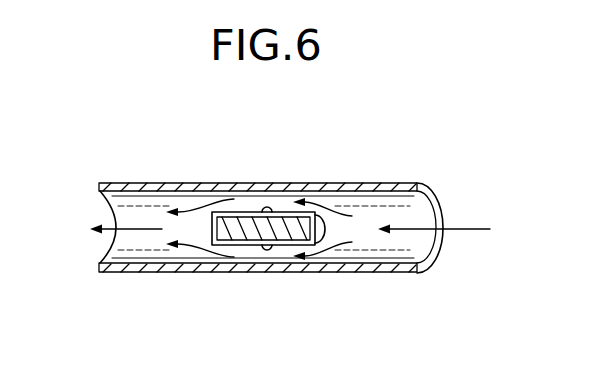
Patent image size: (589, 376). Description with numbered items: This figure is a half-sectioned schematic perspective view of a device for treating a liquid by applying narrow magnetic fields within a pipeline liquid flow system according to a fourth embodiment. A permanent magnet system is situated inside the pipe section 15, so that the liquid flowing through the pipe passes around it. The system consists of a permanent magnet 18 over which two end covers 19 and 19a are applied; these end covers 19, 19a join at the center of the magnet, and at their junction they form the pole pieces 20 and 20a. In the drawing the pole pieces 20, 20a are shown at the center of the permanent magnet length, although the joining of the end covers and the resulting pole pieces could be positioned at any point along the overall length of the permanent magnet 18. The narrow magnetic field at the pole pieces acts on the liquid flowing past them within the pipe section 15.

The pipe section 15 is at (332, 272).
The permanent magnet 18 is at (320, 222).
The end cover 19 is at (240, 212).
The end cover 19a is at (326, 232).
The pole piece 20 is at (280, 212).
The pole piece 20a is at (267, 206).